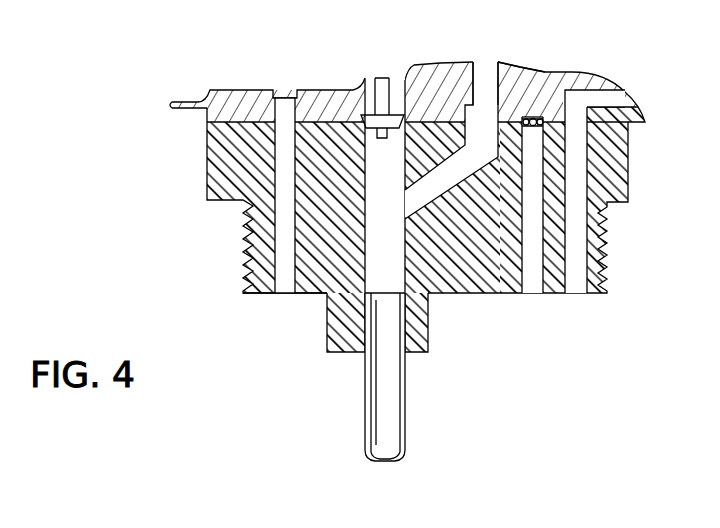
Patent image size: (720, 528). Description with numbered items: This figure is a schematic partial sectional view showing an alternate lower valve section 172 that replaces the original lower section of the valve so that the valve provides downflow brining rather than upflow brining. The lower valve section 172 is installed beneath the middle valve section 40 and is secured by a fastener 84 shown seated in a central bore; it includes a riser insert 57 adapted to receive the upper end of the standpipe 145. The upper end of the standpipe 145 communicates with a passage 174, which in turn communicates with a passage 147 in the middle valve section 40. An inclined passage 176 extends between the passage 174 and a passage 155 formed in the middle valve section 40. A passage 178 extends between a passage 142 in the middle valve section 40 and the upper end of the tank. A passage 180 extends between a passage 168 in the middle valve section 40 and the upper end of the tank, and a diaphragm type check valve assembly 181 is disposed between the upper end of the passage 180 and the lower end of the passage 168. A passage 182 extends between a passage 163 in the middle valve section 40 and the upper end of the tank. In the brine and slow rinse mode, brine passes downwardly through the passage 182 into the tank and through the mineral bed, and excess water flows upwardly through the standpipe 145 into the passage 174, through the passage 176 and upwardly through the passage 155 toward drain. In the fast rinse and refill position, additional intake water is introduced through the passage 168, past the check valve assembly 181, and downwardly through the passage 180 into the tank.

The middle valve section 40 is at (172, 96).
The passage 142 is at (283, 98).
The screw 84 is at (368, 83).
The passage 147 is at (404, 84).
The passage 155 is at (492, 74).
The passage 168 is at (543, 79).
The diaphragm type check valve assembly 181 is at (532, 104).
The passage 163 is at (602, 107).
The passage 176 is at (422, 196).
The lower valve section 172 is at (141, 218).
The passage 178 is at (280, 276).
The riser insert 57 is at (327, 325).
The passage 174 is at (372, 258).
The standpipe 145 is at (407, 403).
The passage 180 is at (524, 272).
The passage 182 is at (568, 272).